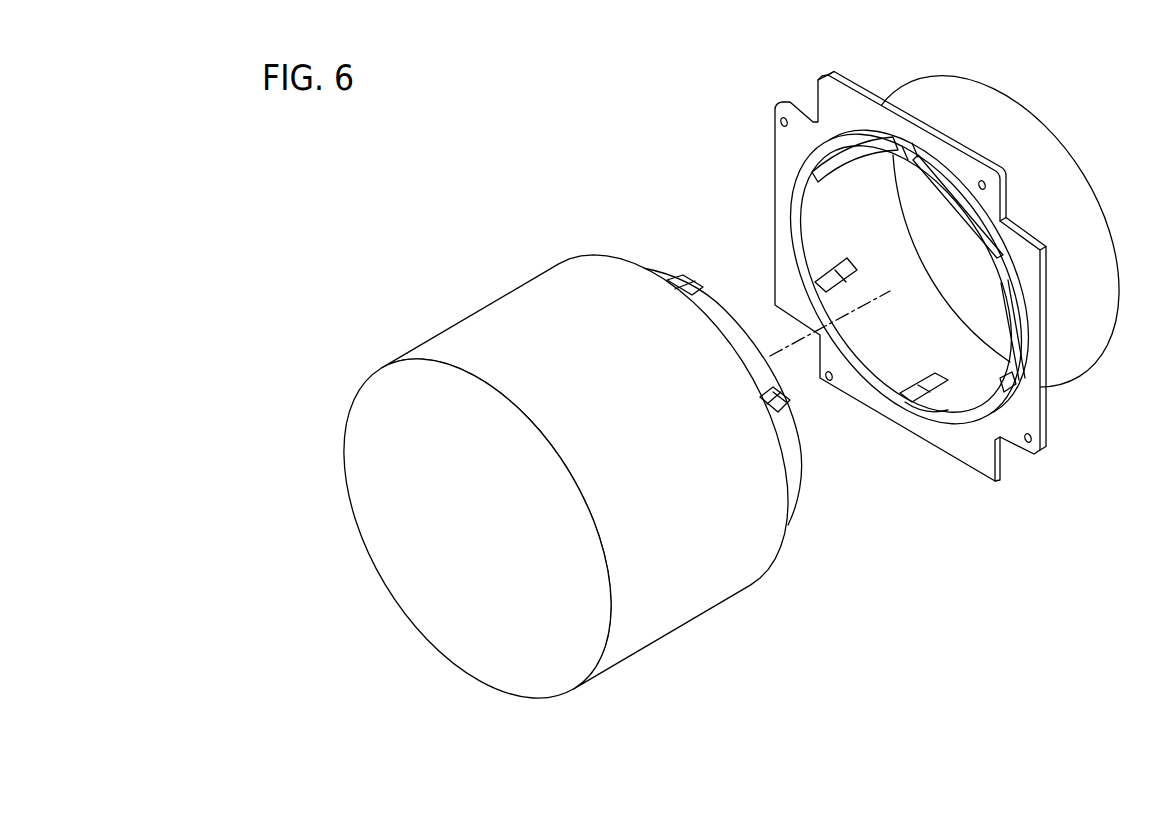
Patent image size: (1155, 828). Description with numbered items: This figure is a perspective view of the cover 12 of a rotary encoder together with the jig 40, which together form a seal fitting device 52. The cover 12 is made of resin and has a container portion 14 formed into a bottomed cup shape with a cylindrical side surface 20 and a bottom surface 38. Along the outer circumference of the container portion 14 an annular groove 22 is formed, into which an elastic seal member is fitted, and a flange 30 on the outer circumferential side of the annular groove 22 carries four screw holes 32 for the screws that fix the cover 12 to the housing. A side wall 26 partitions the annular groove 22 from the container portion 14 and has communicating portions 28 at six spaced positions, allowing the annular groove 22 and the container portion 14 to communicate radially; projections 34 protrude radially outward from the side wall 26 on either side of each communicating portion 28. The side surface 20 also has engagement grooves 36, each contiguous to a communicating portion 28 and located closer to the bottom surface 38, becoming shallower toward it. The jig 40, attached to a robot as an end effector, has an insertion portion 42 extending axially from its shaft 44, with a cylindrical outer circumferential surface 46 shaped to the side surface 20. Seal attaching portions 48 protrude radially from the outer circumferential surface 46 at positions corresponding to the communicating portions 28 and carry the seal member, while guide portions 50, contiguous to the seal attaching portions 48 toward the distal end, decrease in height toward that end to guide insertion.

The cover 12 is at (1068, 133).
The container portion 14 is at (914, 298).
The side surface 20 is at (911, 412).
The annular groove 22 is at (948, 440).
The side wall 26 is at (1008, 372).
The communicating portions 28 is at (808, 288).
The flange 30 is at (838, 107).
The screw holes 32 is at (978, 183).
The projections 34 is at (796, 307).
The engagement grooves 36 is at (838, 270).
The bottom surface 38 is at (950, 268).
The jig 40 is at (567, 471).
The insertion portion 42 is at (671, 267).
The shaft 44 is at (688, 622).
The outer circumferential surface 46 is at (793, 482).
The seal attaching portions 48 is at (768, 415).
The guide portions 50 is at (790, 405).
The seal fitting device 52 is at (535, 148).